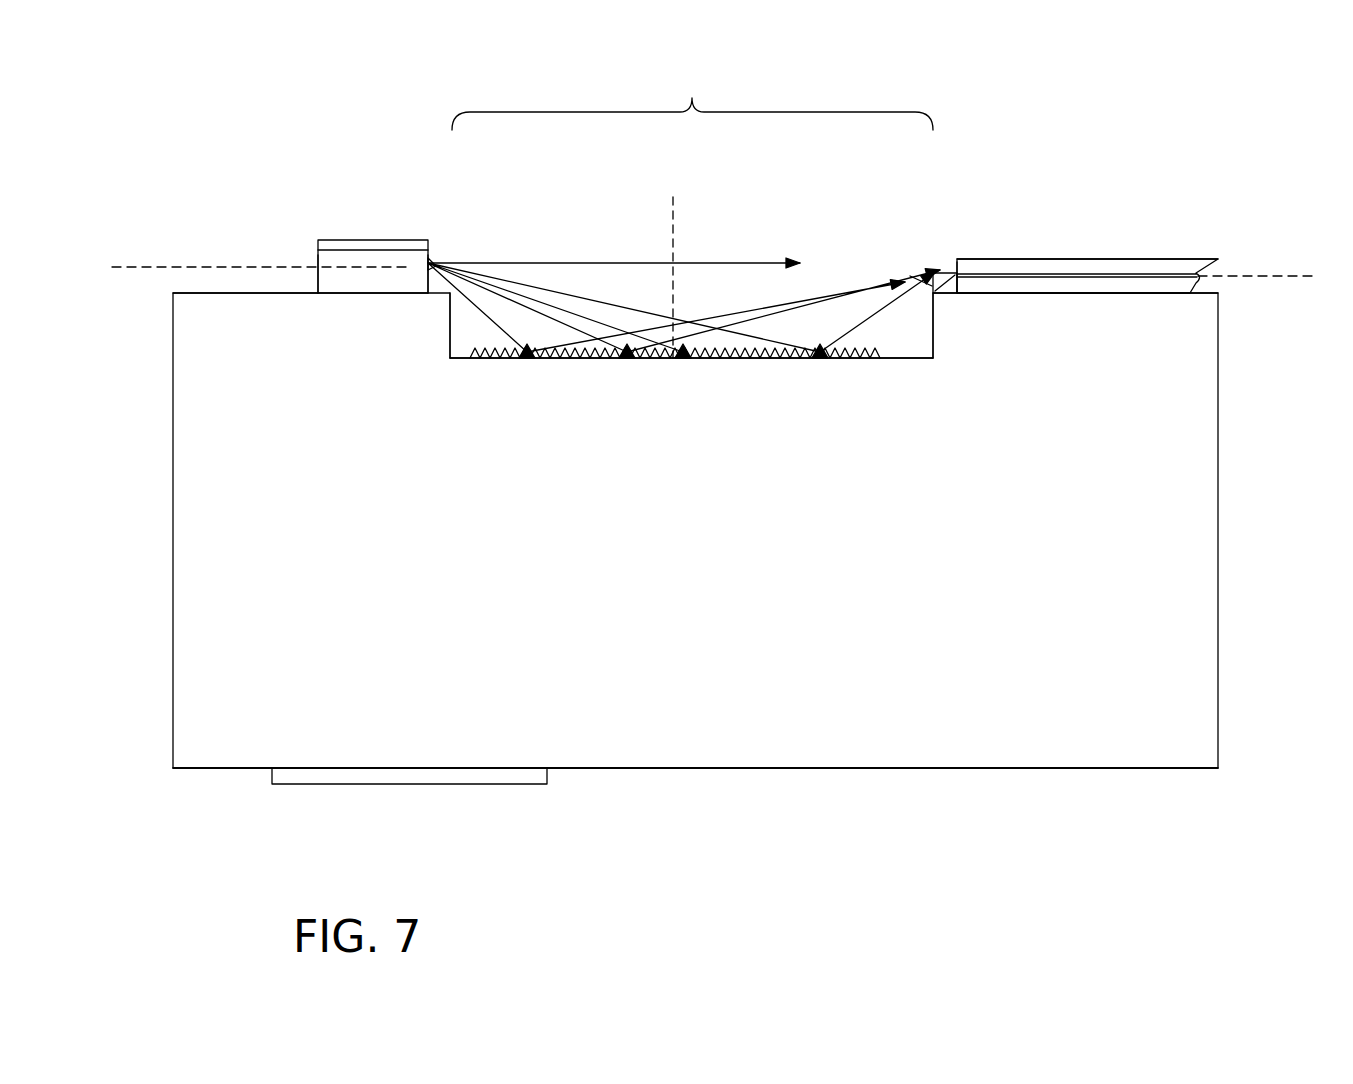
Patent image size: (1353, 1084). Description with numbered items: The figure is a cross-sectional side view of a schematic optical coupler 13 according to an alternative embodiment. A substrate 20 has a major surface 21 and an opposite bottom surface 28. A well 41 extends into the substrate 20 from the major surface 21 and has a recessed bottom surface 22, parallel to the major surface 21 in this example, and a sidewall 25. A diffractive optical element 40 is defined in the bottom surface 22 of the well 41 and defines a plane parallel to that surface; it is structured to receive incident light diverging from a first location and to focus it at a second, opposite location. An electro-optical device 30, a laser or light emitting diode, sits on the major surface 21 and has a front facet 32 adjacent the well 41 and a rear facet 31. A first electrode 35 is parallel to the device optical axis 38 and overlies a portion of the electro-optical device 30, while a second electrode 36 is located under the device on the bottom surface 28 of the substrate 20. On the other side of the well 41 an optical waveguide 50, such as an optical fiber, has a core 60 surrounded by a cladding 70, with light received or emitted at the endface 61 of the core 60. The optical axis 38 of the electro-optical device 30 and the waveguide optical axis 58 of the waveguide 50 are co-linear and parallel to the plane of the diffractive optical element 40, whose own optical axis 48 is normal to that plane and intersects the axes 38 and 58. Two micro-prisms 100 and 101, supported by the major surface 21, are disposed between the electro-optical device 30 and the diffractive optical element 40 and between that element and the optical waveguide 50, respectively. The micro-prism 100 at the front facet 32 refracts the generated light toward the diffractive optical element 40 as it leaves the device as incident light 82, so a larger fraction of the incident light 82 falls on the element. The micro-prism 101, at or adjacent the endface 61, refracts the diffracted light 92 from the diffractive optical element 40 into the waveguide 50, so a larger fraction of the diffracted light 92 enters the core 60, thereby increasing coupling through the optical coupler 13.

The optical coupler 13 is at (688, 890).
The substrate 20 is at (1006, 735).
The major surface 21 is at (200, 295).
The bottom surface 22 is at (900, 358).
The sidewall 25 is at (447, 323).
The bottom surface 28 is at (788, 770).
The electro-optical device 30 is at (360, 282).
The rear facet 31 is at (315, 280).
The front facet 32 is at (428, 278).
The first electrode 35 is at (418, 241).
The second electrode 36 is at (483, 770).
The optical axis 38 is at (255, 267).
The diffractive optical element 40 is at (637, 357).
The well 41 is at (692, 93).
The optical axis 48 is at (673, 233).
The optical waveguide 50 is at (1075, 222).
The waveguide optical axis 58 is at (1248, 276).
The core 60 is at (1125, 270).
The endface 61 is at (960, 277).
The cladding 70 is at (983, 268).
The incident light 82 is at (505, 222).
The diffracted light 92 is at (833, 290).
The micro-prism 100 is at (438, 291).
The micro-prism 101 is at (927, 287).